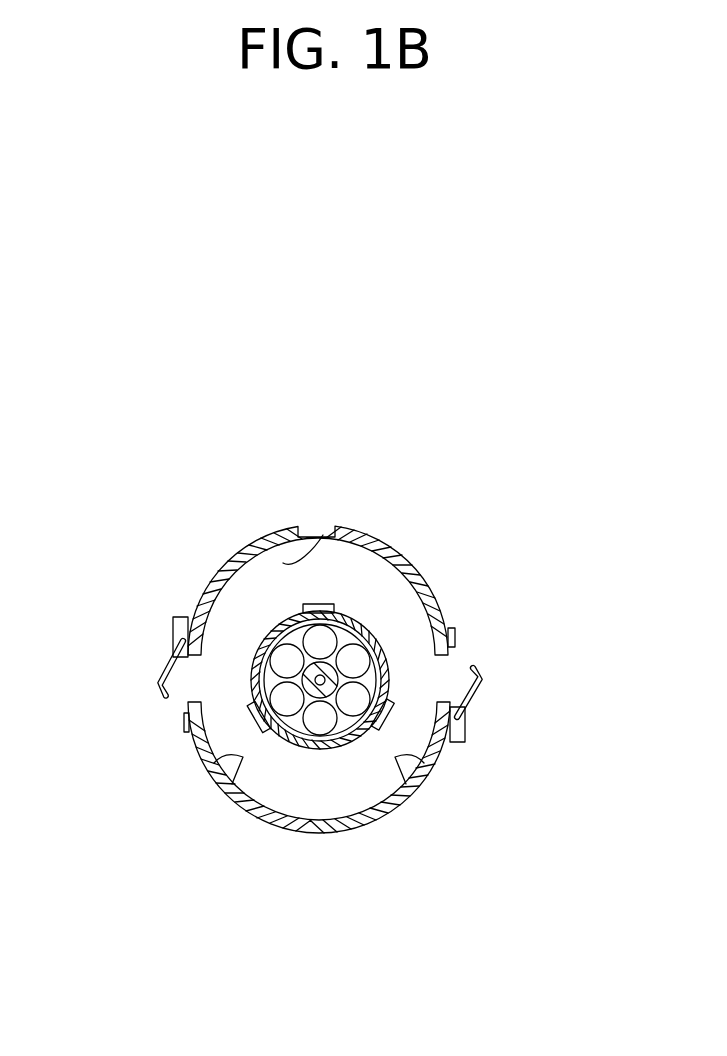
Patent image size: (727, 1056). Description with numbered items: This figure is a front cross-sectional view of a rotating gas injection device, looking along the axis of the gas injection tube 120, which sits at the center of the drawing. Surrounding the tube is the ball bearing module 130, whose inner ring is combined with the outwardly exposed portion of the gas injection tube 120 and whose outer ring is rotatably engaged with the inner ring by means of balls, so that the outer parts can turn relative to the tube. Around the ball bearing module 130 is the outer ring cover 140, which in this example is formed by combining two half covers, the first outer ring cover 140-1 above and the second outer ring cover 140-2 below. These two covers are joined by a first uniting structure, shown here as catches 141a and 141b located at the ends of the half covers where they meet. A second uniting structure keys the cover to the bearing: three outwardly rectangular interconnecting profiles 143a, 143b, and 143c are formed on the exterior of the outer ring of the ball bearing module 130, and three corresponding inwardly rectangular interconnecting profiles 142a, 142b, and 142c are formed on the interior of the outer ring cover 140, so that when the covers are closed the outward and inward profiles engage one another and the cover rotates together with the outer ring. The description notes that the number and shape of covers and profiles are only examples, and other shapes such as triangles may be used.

The gas injection tube 120 is at (326, 681).
The ball bearing module 130 is at (230, 675).
The outer ring cover 140 is at (470, 500).
The first outer ring cover 140-1 is at (298, 531).
The second outer ring cover 140-2 is at (303, 830).
The catch 141a is at (168, 672).
The catch 141b is at (480, 706).
The inwardly rectangular interconnecting profile 142a is at (283, 563).
The inwardly rectangular interconnecting profile 142b is at (243, 757).
The inwardly rectangular interconnecting profile 142c is at (408, 782).
The outwardly rectangular interconnecting profile 143a is at (321, 604).
The outwardly rectangular interconnecting profile 143b is at (255, 714).
The outwardly rectangular interconnecting profile 143c is at (385, 716).